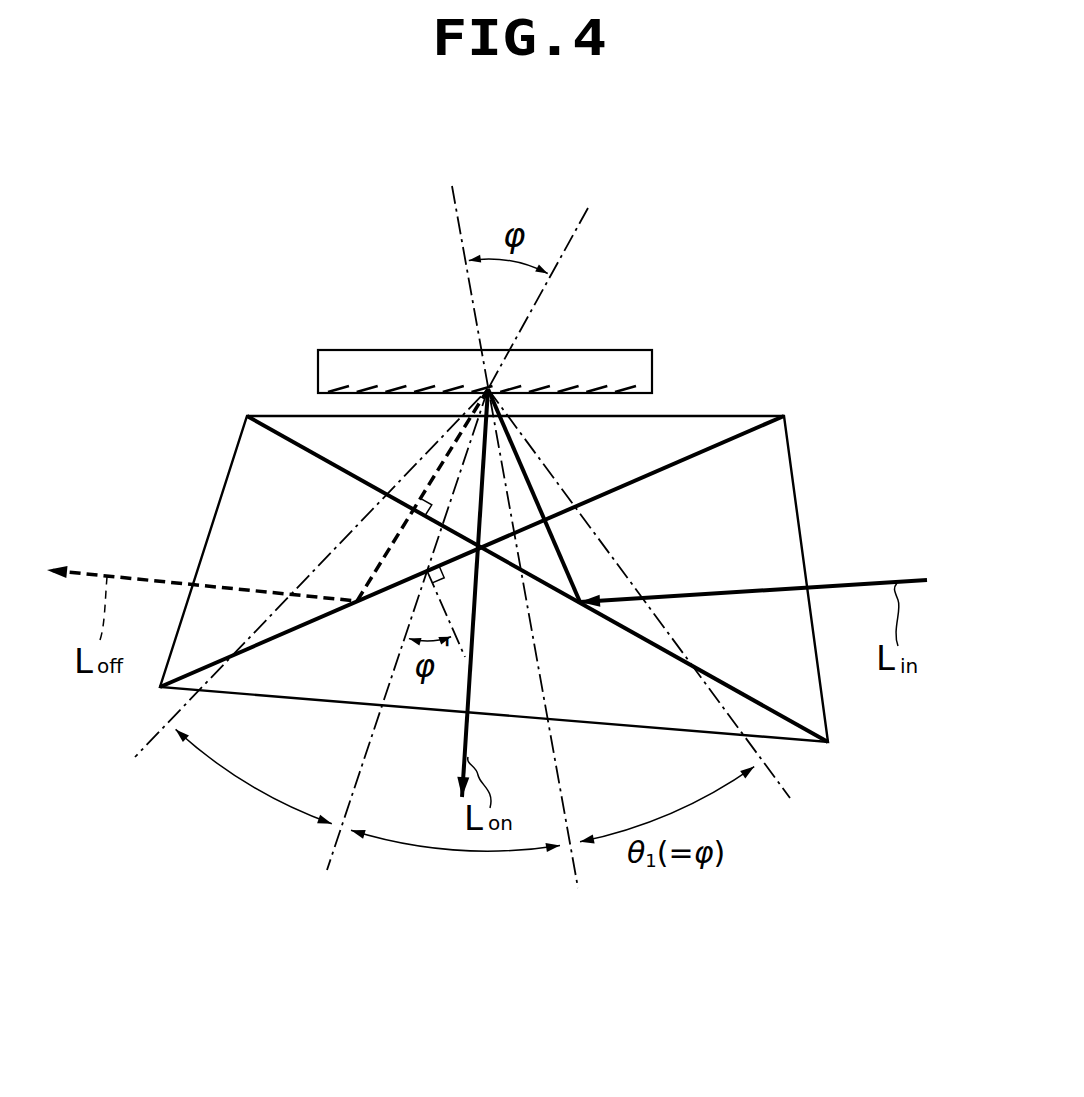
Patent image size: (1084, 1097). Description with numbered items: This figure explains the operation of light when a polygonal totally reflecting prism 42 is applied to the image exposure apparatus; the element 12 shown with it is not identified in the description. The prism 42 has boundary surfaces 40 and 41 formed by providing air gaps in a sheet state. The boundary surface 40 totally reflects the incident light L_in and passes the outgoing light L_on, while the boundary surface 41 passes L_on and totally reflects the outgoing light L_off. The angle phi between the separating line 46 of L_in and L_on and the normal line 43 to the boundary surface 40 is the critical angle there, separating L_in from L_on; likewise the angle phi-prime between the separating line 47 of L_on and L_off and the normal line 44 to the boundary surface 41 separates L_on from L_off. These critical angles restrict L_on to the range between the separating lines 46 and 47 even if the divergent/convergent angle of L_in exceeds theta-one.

The micromirror device (reflective light modulator) 12 is at (654, 367).
The boundary surface 40 is at (284, 440).
The boundary surface 41 is at (752, 433).
The totally reflecting prism 42 is at (840, 543).
The normal line 43 is at (582, 224).
The normal line 44 is at (448, 615).
The separating line 46 is at (450, 203).
The separating line 47 is at (333, 853).